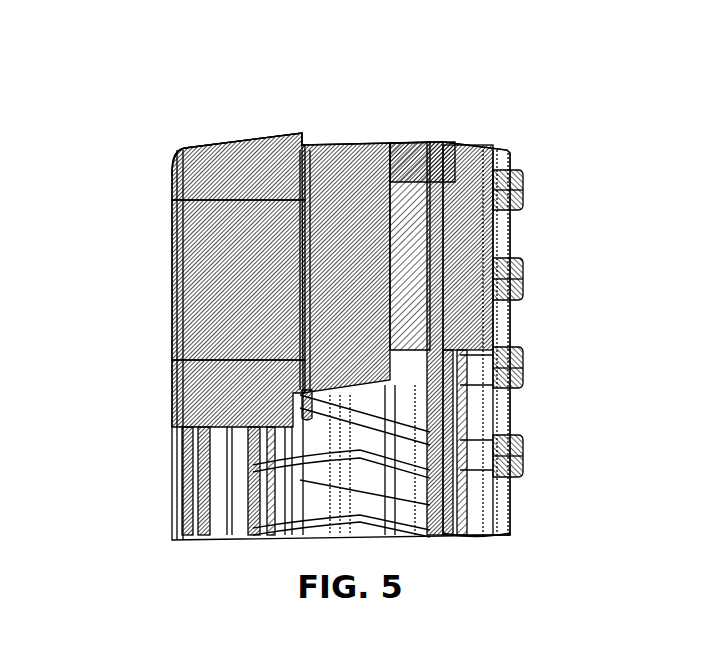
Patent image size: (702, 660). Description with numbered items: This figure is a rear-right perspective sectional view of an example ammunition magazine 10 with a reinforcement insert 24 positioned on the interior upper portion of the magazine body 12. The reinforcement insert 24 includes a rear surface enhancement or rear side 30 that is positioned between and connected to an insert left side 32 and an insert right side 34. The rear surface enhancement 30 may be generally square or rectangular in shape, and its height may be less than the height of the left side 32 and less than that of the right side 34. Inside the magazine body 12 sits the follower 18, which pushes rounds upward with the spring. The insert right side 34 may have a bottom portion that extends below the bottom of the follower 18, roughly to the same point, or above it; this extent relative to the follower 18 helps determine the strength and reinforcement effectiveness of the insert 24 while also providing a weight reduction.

The ammunition magazine 10 is at (577, 101).
The magazine body 12 is at (505, 238).
The follower 18 is at (483, 330).
The reinforcement insert 24 is at (177, 243).
The rear surface enhancement 30 is at (185, 334).
The insert left side 32 is at (215, 398).
The insert right side 34 is at (388, 348).